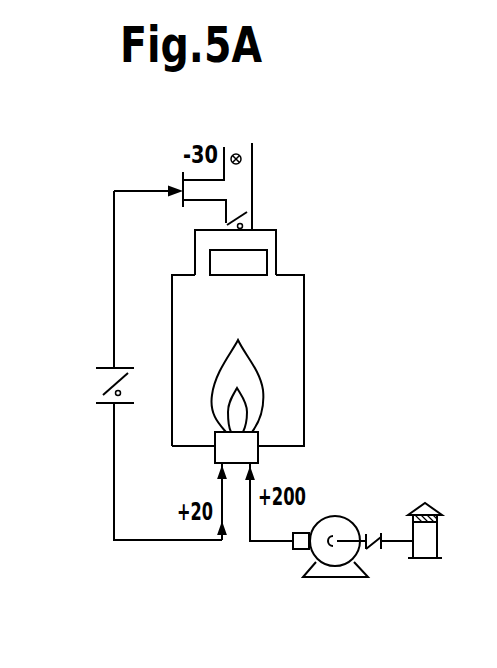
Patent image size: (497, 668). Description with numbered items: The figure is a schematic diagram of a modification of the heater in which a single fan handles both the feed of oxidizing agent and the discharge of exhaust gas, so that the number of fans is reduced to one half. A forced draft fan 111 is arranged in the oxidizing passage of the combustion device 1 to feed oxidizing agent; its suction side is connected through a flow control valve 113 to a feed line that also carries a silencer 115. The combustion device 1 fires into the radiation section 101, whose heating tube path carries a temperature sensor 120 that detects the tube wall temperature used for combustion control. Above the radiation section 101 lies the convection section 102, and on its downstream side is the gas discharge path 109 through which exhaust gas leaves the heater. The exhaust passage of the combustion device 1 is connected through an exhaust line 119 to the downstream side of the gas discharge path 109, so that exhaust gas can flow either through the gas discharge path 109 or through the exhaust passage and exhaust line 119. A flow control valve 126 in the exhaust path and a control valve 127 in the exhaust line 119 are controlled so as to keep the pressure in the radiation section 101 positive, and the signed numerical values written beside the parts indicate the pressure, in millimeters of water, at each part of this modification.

The combustion device 1 is at (260, 452).
The radiation section 101 is at (287, 353).
The convection section 102 is at (265, 238).
The gas discharge path 109 is at (253, 143).
The forced draft fan 111 is at (332, 515).
The flow control valve 113 is at (377, 550).
The silencer 115 is at (415, 508).
The exhaust line 119 is at (114, 263).
The temperature sensor 120 is at (272, 427).
The flow control valve 126 is at (238, 215).
The control valve 127 is at (107, 393).